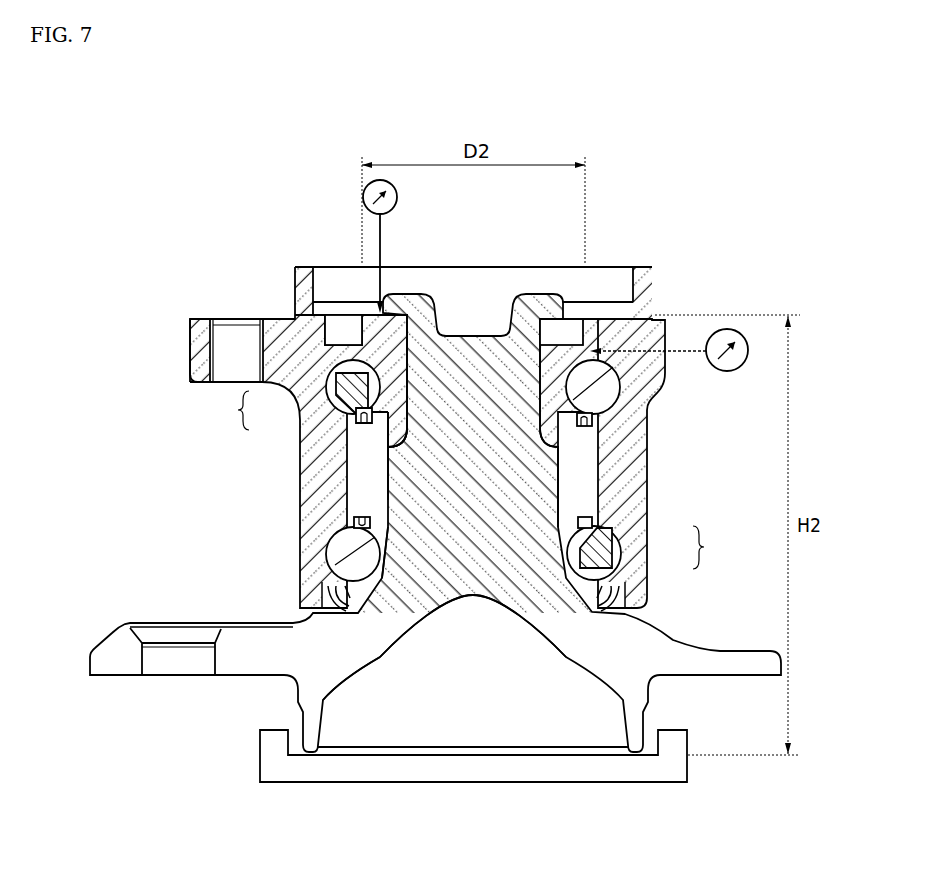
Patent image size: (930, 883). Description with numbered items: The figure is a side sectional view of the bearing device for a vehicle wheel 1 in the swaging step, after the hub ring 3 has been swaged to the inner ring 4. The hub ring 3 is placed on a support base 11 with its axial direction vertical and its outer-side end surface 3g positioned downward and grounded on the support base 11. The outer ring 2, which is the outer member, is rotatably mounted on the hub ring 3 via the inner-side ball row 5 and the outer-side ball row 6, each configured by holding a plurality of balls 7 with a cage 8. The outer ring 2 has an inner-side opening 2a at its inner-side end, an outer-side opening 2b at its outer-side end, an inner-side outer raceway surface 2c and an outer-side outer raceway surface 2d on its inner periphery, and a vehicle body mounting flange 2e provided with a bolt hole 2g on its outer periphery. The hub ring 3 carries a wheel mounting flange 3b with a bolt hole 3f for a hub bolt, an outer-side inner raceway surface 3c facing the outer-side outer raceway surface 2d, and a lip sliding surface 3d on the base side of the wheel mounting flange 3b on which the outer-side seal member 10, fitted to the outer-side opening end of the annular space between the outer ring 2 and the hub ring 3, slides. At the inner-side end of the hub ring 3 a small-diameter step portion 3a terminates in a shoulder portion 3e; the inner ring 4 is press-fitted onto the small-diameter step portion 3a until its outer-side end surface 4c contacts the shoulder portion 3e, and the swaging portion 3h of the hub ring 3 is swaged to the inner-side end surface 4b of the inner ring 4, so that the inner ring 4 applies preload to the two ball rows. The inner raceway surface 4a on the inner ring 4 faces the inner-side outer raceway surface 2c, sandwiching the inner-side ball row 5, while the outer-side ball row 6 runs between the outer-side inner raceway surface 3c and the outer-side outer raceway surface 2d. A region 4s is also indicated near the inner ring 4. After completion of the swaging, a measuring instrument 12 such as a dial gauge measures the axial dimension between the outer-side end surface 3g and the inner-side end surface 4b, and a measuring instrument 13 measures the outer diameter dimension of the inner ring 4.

The bearing device for a vehicle wheel 1 is at (265, 262).
The outer ring 2 is at (289, 493).
The inner-side opening 2a is at (635, 289).
The outer-side opening 2b is at (405, 635).
The inner-side outer raceway surface 2c is at (615, 378).
The outer-side outer raceway surface 2d is at (328, 540).
The vehicle body mounting flange 2e is at (195, 317).
The bolt hole 2g is at (248, 340).
The hub ring 3 is at (263, 703).
The small-diameter step portion 3a is at (568, 440).
The wheel mounting flange 3b is at (113, 677).
The outer-side inner raceway surface 3c is at (340, 527).
The lip sliding surface 3d is at (322, 590).
The shoulder portion 3e is at (393, 430).
The bolt hole 3f is at (143, 658).
The outer-side end surface 3g is at (308, 753).
The swaging portion 3h is at (403, 298).
The inner ring 4 is at (355, 330).
The inner raceway surface 4a is at (585, 418).
The inner-side end surface 4b is at (570, 318).
The outer-side end surface 4c is at (400, 447).
The gap 4s is at (590, 332).
The inner-side ball row 5 is at (238, 410).
The outer-side ball row 6 is at (704, 547).
The ball 7 is at (327, 395).
The cage 8 is at (337, 408).
The outer-side seal member 10 is at (562, 630).
The support base 11 is at (635, 773).
The measuring instrument 12 is at (398, 197).
The measuring instrument 13 is at (735, 370).